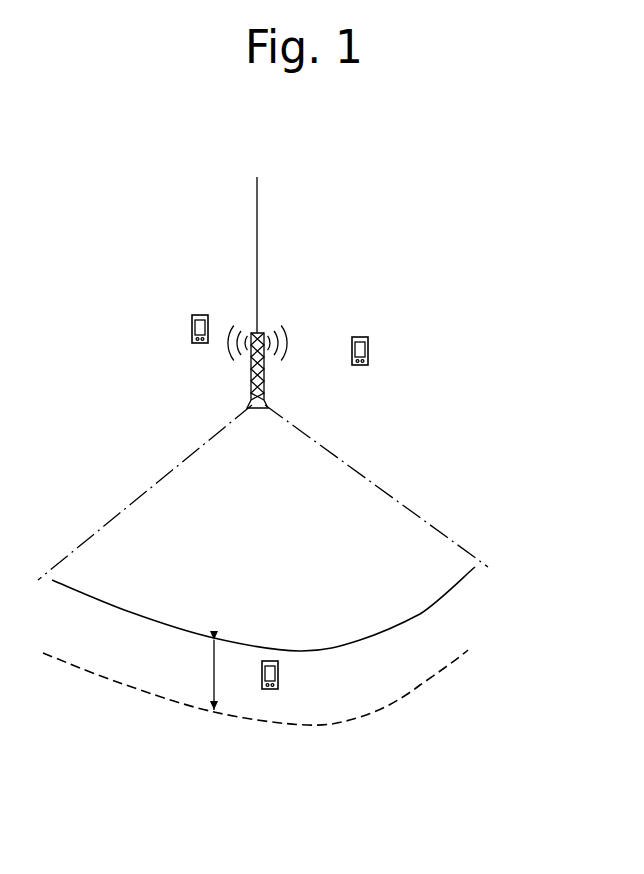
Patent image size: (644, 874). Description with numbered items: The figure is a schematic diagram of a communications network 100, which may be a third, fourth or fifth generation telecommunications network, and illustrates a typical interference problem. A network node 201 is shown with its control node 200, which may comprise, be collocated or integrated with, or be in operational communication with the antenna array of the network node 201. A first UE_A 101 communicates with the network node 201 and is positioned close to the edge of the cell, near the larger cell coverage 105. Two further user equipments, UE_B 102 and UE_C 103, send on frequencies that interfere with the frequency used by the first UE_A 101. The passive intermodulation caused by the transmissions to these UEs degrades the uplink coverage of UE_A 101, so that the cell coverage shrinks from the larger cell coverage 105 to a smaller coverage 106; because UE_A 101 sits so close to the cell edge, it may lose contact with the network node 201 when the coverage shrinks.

The communications network 100 is at (130, 152).
The control node 200 is at (265, 317).
The network node 201 is at (273, 317).
The UE_C 103 is at (172, 290).
The UE_B 102 is at (386, 318).
The first UE_A 101 is at (340, 683).
The smaller coverage 106 is at (464, 574).
The cell coverage 105 is at (456, 660).